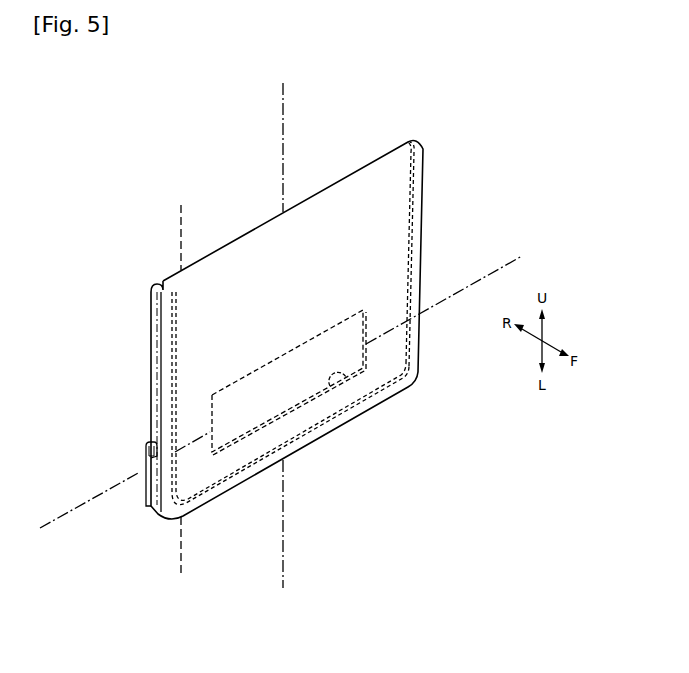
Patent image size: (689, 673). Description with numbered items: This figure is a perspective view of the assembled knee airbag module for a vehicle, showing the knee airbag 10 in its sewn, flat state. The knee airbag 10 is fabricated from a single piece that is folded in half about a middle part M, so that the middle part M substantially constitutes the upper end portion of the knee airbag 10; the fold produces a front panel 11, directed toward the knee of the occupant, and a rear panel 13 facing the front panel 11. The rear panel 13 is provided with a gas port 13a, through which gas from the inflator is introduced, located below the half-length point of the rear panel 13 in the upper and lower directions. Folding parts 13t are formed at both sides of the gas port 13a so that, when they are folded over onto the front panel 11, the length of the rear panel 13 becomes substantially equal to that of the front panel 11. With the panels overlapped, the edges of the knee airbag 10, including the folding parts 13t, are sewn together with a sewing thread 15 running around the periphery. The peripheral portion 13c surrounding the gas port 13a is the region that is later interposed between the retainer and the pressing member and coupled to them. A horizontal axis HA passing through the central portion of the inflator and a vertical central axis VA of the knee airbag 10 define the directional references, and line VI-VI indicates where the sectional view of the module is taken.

The knee airbag 10 is at (291, 302).
The front panel 11 is at (400, 251).
The rear panel 13 is at (113, 402).
The gas port 13a is at (333, 388).
The peripheral portion 13c is at (260, 382).
The folding parts 13t is at (148, 458).
The sewing thread 15 is at (417, 184).
The middle part M is at (370, 162).
The vertical central axis VA is at (283, 138).
The horizontal axis HA is at (459, 299).
The line VI- VI is at (172, 209).